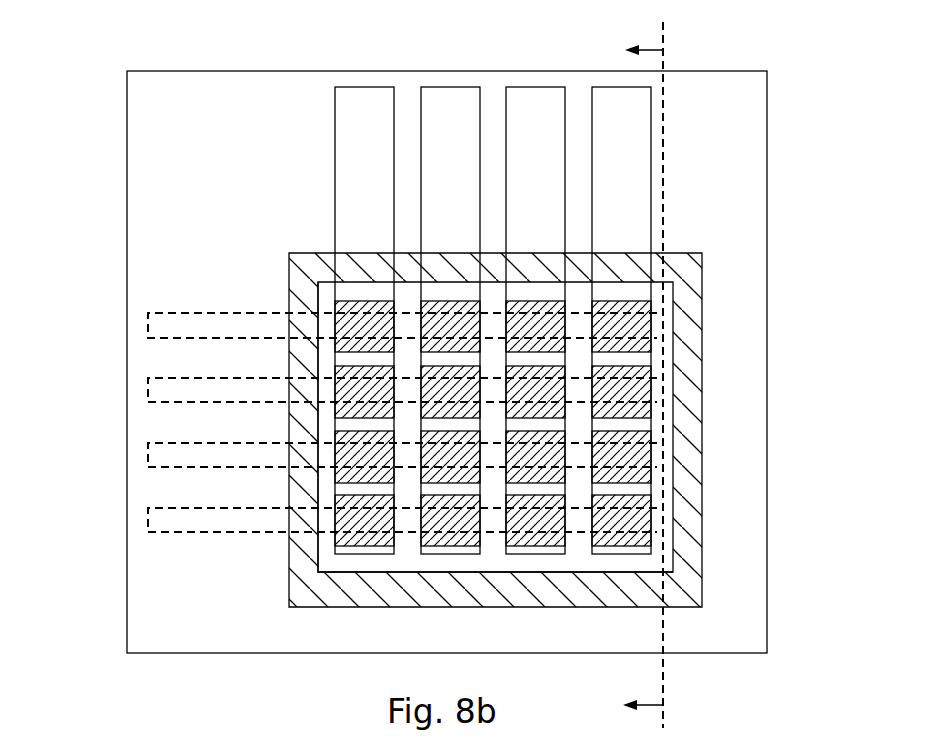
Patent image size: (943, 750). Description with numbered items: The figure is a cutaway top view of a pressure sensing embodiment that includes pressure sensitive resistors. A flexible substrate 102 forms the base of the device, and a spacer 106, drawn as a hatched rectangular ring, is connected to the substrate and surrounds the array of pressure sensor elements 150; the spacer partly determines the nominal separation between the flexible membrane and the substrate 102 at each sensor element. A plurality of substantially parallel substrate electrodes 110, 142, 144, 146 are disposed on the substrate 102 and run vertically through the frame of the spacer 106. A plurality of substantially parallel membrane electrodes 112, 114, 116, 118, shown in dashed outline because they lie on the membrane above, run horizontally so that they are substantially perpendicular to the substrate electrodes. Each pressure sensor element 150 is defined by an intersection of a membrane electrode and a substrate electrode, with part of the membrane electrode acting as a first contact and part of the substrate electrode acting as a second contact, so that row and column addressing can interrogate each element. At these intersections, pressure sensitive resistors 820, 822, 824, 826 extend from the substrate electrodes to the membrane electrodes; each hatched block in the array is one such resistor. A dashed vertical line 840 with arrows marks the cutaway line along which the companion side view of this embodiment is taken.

The flexible substrate 102 is at (140, 170).
The spacer 106 is at (314, 256).
The substrate electrode 110 is at (632, 125).
The membrane electrode 112 is at (148, 526).
The membrane electrode 114 is at (148, 460).
The membrane electrode 116 is at (148, 395).
The membrane electrode 118 is at (148, 330).
The substrate electrode 142 is at (528, 103).
The substrate electrode 144 is at (458, 103).
The substrate electrode 146 is at (367, 103).
The pressure sensor element 150 is at (318, 571).
The pressure sensitive resistor 820 is at (637, 522).
The pressure sensitive resistor 822 is at (642, 455).
The pressure sensitive resistor 824 is at (642, 398).
The pressure sensitive resistor 826 is at (643, 330).
The cutaway line 840 is at (663, 86).